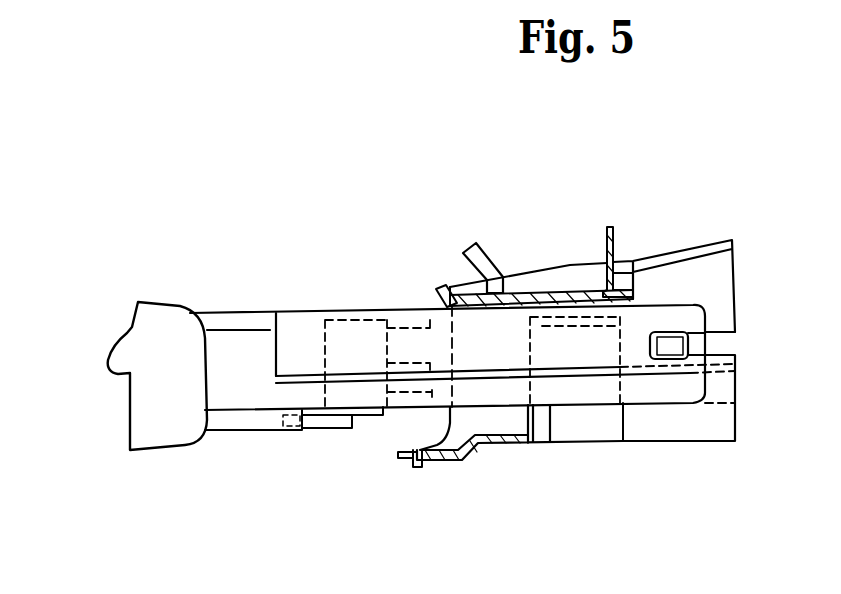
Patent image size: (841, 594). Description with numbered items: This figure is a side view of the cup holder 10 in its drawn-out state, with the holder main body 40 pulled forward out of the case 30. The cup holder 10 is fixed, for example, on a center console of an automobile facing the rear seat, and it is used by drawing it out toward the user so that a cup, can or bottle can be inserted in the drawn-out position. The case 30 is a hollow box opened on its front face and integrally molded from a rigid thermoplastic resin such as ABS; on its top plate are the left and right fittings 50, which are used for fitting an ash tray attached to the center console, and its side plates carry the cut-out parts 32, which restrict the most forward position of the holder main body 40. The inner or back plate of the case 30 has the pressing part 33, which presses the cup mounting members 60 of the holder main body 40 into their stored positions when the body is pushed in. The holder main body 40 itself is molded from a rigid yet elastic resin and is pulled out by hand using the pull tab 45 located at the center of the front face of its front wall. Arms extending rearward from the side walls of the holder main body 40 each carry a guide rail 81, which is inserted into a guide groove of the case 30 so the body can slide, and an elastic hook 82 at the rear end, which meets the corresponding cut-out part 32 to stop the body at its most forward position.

The cup holder 10 is at (203, 154).
The case 30 is at (692, 247).
The cut-out part 32 is at (723, 342).
The pressing part 33 is at (527, 338).
The holder main body 40 is at (233, 321).
The pull tab 45 is at (118, 373).
The fitting 50 is at (465, 250).
The cup mounting member 60 is at (362, 393).
The guide rail 81 is at (305, 376).
The elastic hook 82 is at (672, 343).